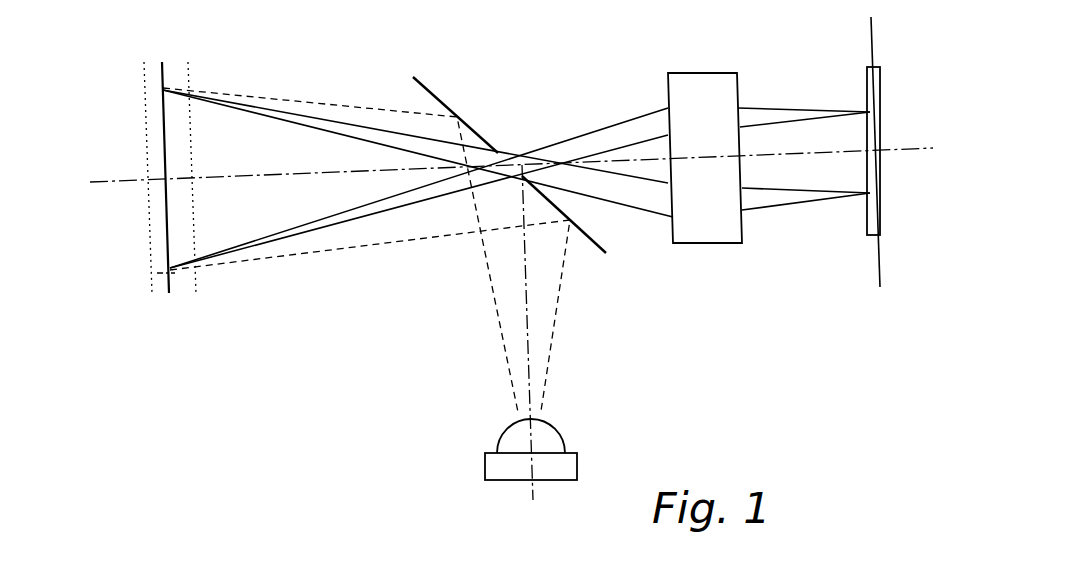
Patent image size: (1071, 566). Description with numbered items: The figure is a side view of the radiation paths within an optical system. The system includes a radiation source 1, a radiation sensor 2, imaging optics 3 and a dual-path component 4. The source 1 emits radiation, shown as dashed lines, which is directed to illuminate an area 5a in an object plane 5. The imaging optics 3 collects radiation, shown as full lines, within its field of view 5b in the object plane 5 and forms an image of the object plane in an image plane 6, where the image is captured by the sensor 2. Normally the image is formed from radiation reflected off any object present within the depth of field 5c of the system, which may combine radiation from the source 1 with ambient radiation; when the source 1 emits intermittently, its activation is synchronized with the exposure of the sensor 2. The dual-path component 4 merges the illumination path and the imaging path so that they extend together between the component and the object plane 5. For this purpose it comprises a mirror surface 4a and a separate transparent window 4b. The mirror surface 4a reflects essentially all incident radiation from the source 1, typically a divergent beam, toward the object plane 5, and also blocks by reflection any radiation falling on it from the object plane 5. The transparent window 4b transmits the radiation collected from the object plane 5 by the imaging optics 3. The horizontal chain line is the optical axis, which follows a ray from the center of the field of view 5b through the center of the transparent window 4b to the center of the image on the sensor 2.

The radiation source 1 is at (557, 425).
The radiation sensor 2 is at (882, 70).
The imaging optics 3 is at (730, 243).
The dual-path component 4 is at (474, 266).
The mirror surface 4a is at (423, 88).
The transparent window 4b is at (531, 293).
The object plane 5 is at (164, 75).
The illuminated area 5a is at (88, 85).
The field of view 5b is at (160, 267).
The depth of field 5c is at (194, 299).
The image plane 6 is at (882, 280).